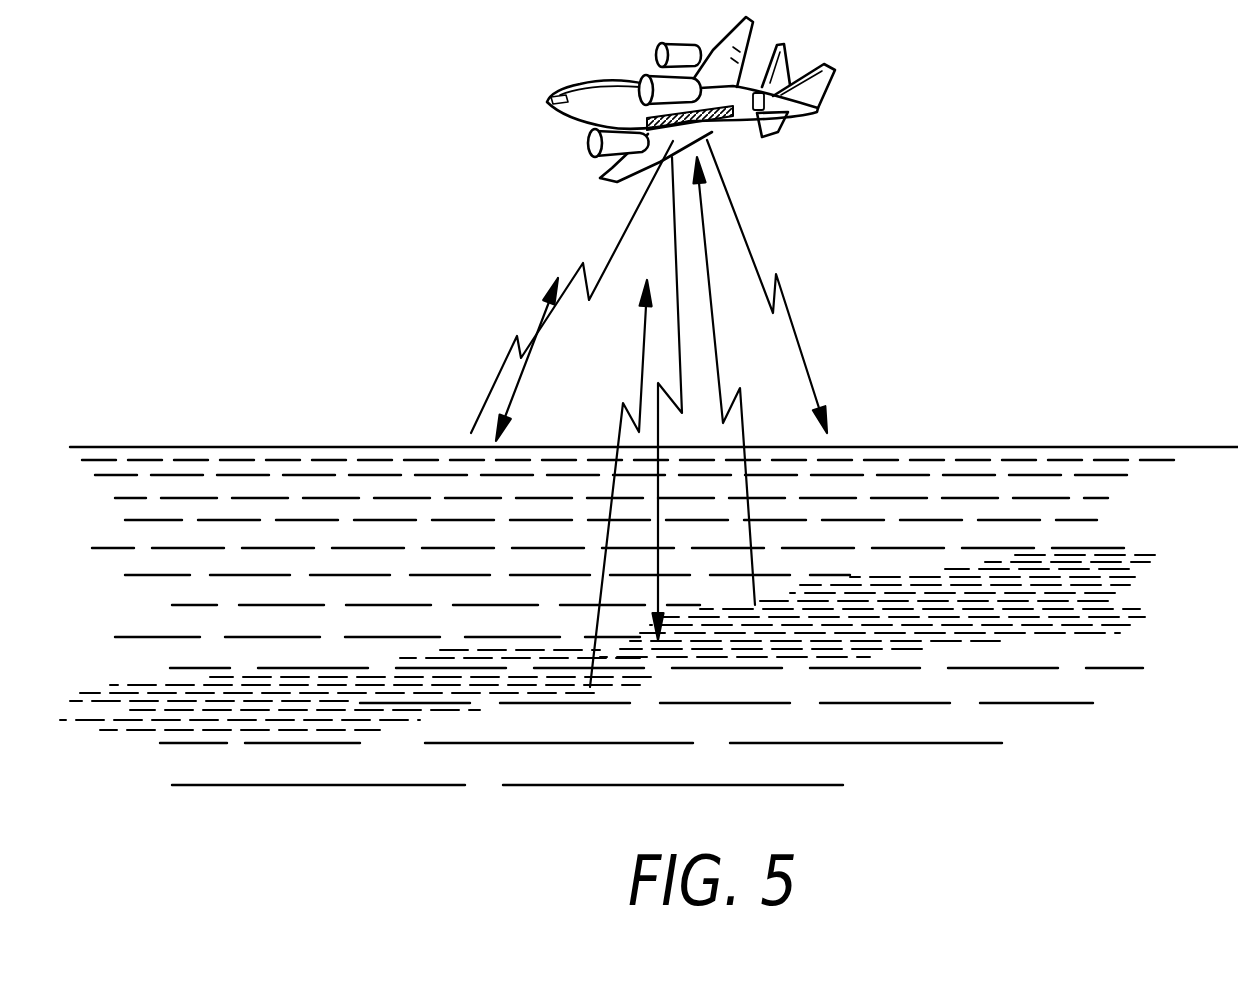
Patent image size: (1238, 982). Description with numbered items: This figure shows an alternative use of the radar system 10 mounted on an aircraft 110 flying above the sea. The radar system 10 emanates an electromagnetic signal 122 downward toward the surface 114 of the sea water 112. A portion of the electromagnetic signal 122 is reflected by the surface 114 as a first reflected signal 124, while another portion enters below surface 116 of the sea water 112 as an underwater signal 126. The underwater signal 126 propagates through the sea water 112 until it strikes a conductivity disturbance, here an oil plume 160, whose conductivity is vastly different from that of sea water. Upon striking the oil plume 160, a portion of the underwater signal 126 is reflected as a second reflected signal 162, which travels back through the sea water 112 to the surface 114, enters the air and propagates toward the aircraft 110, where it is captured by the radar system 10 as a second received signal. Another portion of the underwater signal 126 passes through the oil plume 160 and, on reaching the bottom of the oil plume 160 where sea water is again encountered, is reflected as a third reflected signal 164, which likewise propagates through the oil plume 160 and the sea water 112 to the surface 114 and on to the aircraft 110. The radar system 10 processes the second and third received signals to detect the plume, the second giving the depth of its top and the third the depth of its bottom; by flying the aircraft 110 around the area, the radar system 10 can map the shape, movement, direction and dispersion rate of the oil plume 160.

The radar system 10 is at (729, 136).
The aircraft 110 is at (820, 112).
The sea water 112 is at (992, 467).
The surface 114 is at (912, 447).
The below surface 116 is at (783, 777).
The electromagnetic signal 122 is at (530, 377).
The first reflected signal 124 is at (497, 372).
The underwater signal 126 is at (657, 583).
The oil plume 160 is at (377, 688).
The second reflected signal 162 is at (712, 308).
The third reflected signal 164 is at (640, 387).